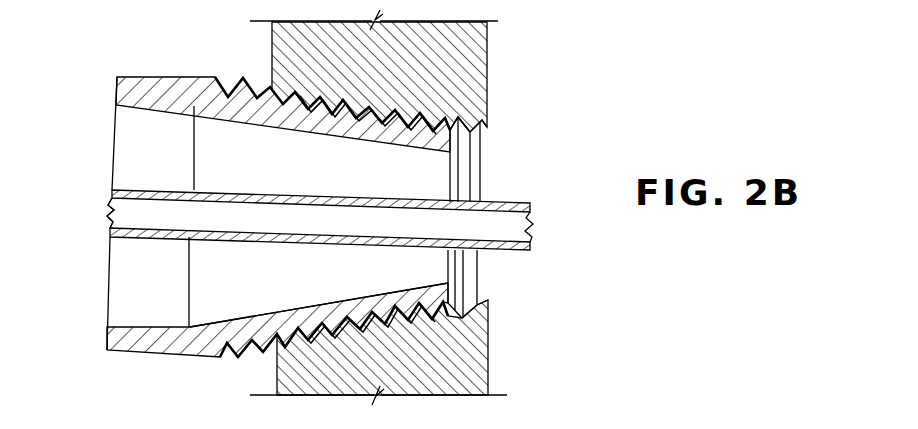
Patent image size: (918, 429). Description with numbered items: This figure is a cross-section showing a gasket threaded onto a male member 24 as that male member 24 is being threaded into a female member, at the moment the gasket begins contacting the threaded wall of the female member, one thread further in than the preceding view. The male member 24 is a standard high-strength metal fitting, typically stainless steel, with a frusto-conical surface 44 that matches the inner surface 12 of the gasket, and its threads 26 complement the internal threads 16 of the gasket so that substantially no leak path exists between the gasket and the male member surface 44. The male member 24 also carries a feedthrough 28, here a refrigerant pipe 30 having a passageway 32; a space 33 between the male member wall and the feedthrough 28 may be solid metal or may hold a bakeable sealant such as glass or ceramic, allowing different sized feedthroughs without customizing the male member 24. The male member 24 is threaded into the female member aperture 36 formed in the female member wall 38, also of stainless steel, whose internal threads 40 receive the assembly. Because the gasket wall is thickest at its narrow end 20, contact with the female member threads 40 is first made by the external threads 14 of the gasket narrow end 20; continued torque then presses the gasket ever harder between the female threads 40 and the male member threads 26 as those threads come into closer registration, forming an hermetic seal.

The inner surface 12 is at (400, 298).
The external threads 14 is at (438, 325).
The internal threads 16 is at (305, 318).
The narrow end 20 is at (445, 111).
The male member 24 is at (106, 337).
The threads 26 is at (268, 352).
The feedthrough 28 is at (112, 228).
The refrigerant pipe 30 is at (113, 192).
The passageway 32 is at (112, 207).
The space 33 is at (128, 272).
The female member aperture 36 is at (481, 143).
The female member wall 38 is at (487, 55).
The internal threads 40 is at (470, 150).
The frusto-conical surface 44 is at (470, 338).